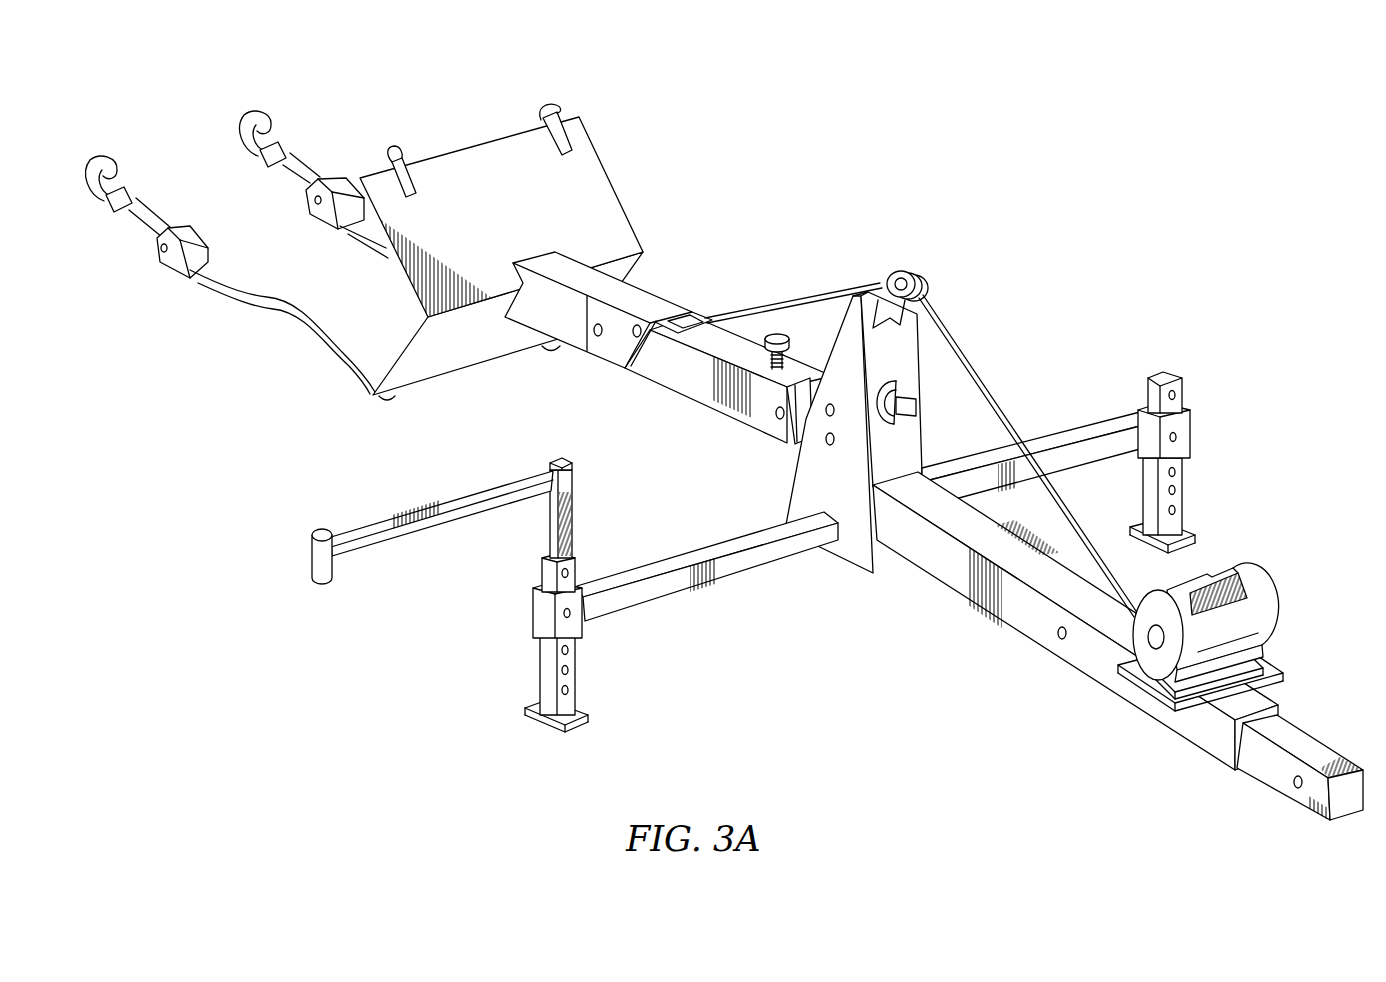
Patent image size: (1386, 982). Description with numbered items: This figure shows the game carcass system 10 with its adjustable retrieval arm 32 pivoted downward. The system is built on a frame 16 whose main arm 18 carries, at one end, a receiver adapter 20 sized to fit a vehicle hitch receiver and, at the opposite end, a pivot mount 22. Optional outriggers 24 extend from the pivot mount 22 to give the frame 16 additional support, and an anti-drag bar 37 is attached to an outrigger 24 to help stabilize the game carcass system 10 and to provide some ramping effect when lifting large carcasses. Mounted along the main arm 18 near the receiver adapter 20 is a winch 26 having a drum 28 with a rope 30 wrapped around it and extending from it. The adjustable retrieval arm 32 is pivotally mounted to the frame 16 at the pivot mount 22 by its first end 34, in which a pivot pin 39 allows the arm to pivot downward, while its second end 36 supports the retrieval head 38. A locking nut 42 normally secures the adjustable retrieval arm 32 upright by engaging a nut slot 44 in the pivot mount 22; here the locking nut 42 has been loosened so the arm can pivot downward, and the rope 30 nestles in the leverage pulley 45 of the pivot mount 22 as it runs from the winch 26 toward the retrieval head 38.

The game carcass system 10 is at (1010, 145).
The frame 16 is at (1028, 680).
The main arm 18 is at (1020, 618).
The receiver adapter 20 is at (1278, 782).
The pivot mount 22 is at (804, 497).
The outriggers 24 is at (1090, 443).
The winch 26 is at (1300, 612).
The drum 28 is at (1246, 578).
The rope 30 is at (957, 350).
The adjustable retrieval arm 32 is at (681, 392).
The first end 34 is at (790, 428).
The second end 36 is at (610, 353).
The anti-drag bar 37 is at (446, 500).
The retrieval head 38 is at (452, 128).
The pivot pin 39 is at (831, 446).
The locking nut 42 is at (775, 334).
The nut slot 44 is at (916, 408).
The leverage pulley 45 is at (900, 272).